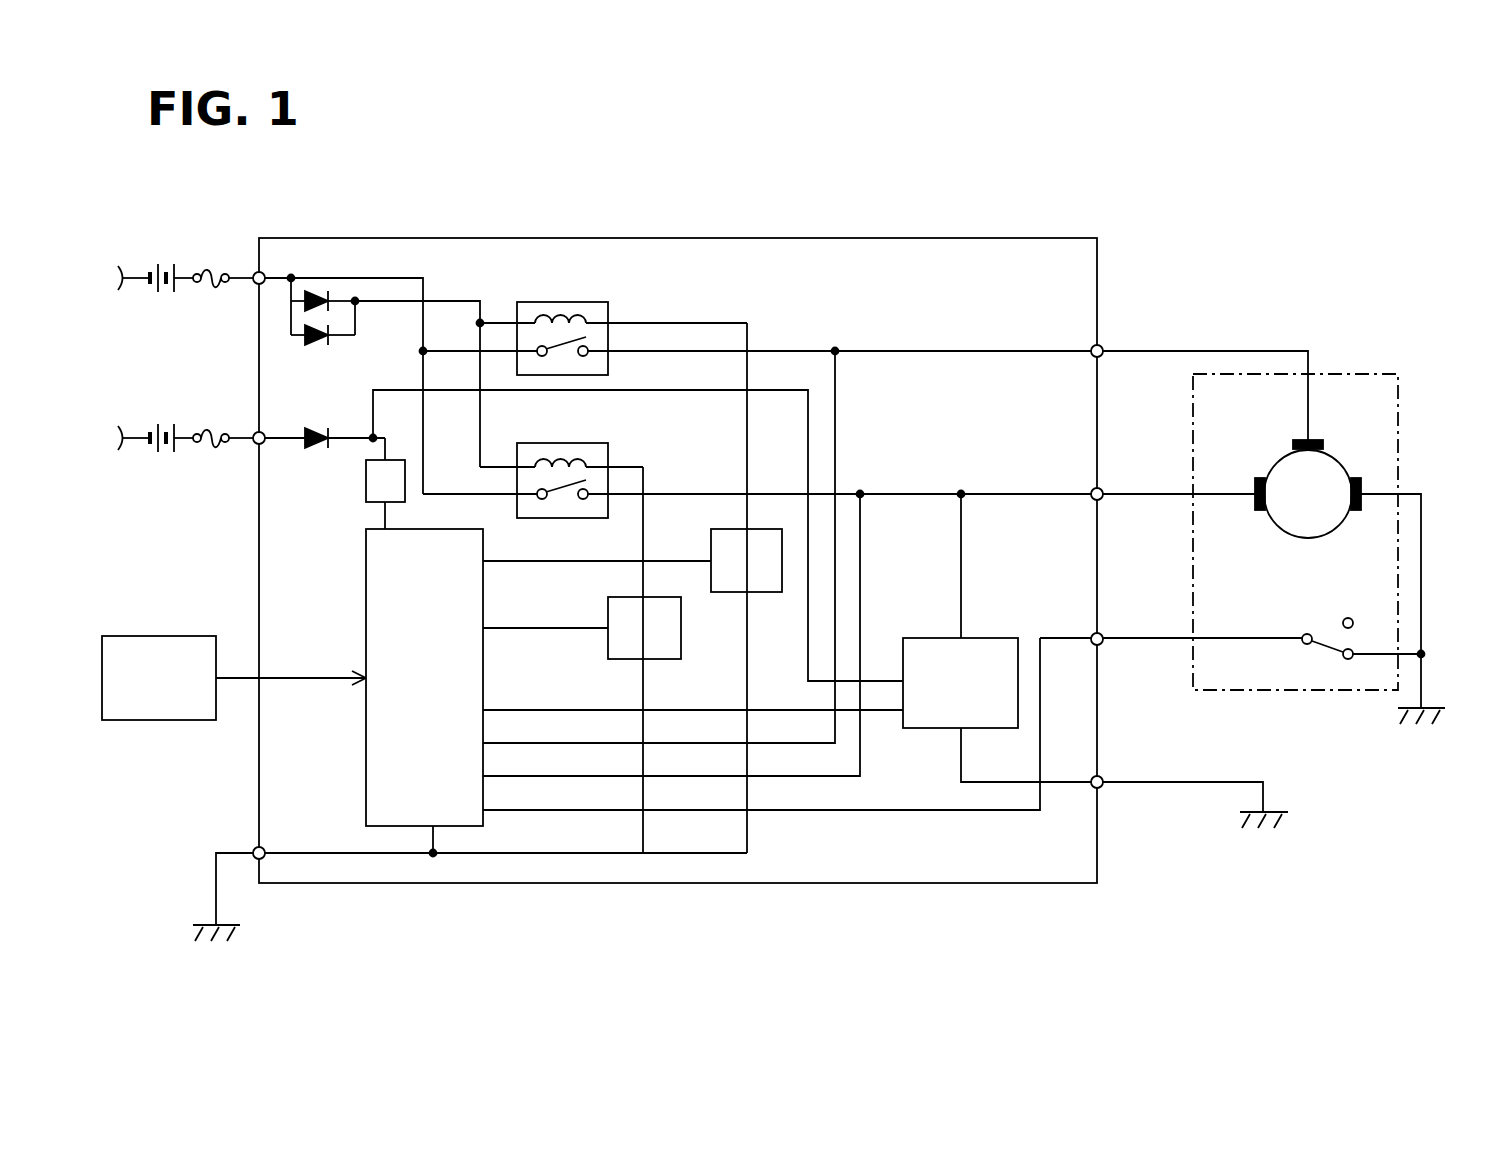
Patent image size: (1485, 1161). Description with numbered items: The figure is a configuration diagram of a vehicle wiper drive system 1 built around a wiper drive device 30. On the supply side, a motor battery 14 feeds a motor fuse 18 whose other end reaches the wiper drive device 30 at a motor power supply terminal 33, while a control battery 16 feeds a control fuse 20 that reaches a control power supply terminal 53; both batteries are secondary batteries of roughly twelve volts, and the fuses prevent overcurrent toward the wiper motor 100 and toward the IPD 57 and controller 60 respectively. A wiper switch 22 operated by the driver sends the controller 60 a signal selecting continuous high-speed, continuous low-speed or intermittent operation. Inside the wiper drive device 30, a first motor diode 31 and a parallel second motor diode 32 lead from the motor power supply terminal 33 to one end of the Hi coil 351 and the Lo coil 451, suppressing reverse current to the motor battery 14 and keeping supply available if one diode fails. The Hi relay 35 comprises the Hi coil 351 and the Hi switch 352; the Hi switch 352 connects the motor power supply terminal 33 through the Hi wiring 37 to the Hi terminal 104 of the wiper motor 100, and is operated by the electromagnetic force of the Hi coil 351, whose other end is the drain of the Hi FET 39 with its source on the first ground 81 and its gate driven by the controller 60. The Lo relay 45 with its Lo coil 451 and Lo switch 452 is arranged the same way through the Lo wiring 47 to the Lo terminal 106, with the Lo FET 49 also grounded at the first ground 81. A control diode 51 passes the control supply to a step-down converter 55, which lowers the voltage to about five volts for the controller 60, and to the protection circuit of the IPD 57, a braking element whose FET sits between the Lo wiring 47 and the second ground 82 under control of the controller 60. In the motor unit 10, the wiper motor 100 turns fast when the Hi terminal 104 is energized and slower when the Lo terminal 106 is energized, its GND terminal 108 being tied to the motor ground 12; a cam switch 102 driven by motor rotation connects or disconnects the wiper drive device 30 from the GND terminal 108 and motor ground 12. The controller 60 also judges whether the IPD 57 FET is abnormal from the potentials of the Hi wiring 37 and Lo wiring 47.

The wiper drive system 1 is at (1296, 196).
The motor unit 10 is at (1307, 491).
The motor ground 12 is at (1440, 708).
The motor battery 14 is at (152, 264).
The control battery 16 is at (152, 424).
The motor fuse 18 is at (198, 273).
The control fuse 20 is at (198, 433).
The wiper switch 22 is at (157, 636).
The wiper drive device 30 is at (1022, 238).
The first motor diode 31 is at (322, 289).
The second motor diode 32 is at (322, 347).
The motor power supply terminal 33 is at (256, 272).
The Hi relay 35 is at (675, 315).
The Hi coil 351 is at (548, 318).
The Hi switch 352 is at (588, 338).
The Hi wiring 37 is at (900, 350).
The Hi FET 39 is at (711, 540).
The Lo relay 45 is at (687, 457).
The Lo coil 451 is at (548, 461).
The Lo switch 452 is at (588, 481).
The Lo wiring 47 is at (900, 494).
The Lo FET 49 is at (608, 604).
The control diode 51 is at (312, 427).
The control power supply terminal 53 is at (256, 432).
The step-down converter 55 is at (365, 490).
The IPD 57 is at (921, 638).
The controller 60 is at (365, 557).
The first ground 81 is at (209, 925).
The second ground 82 is at (1270, 812).
The wiper motor 100 is at (1340, 463).
The cam switch 102 is at (1322, 644).
The Hi terminal 104 is at (1305, 440).
The Lo terminal 106 is at (1256, 488).
The GND terminal 108 is at (1358, 512).